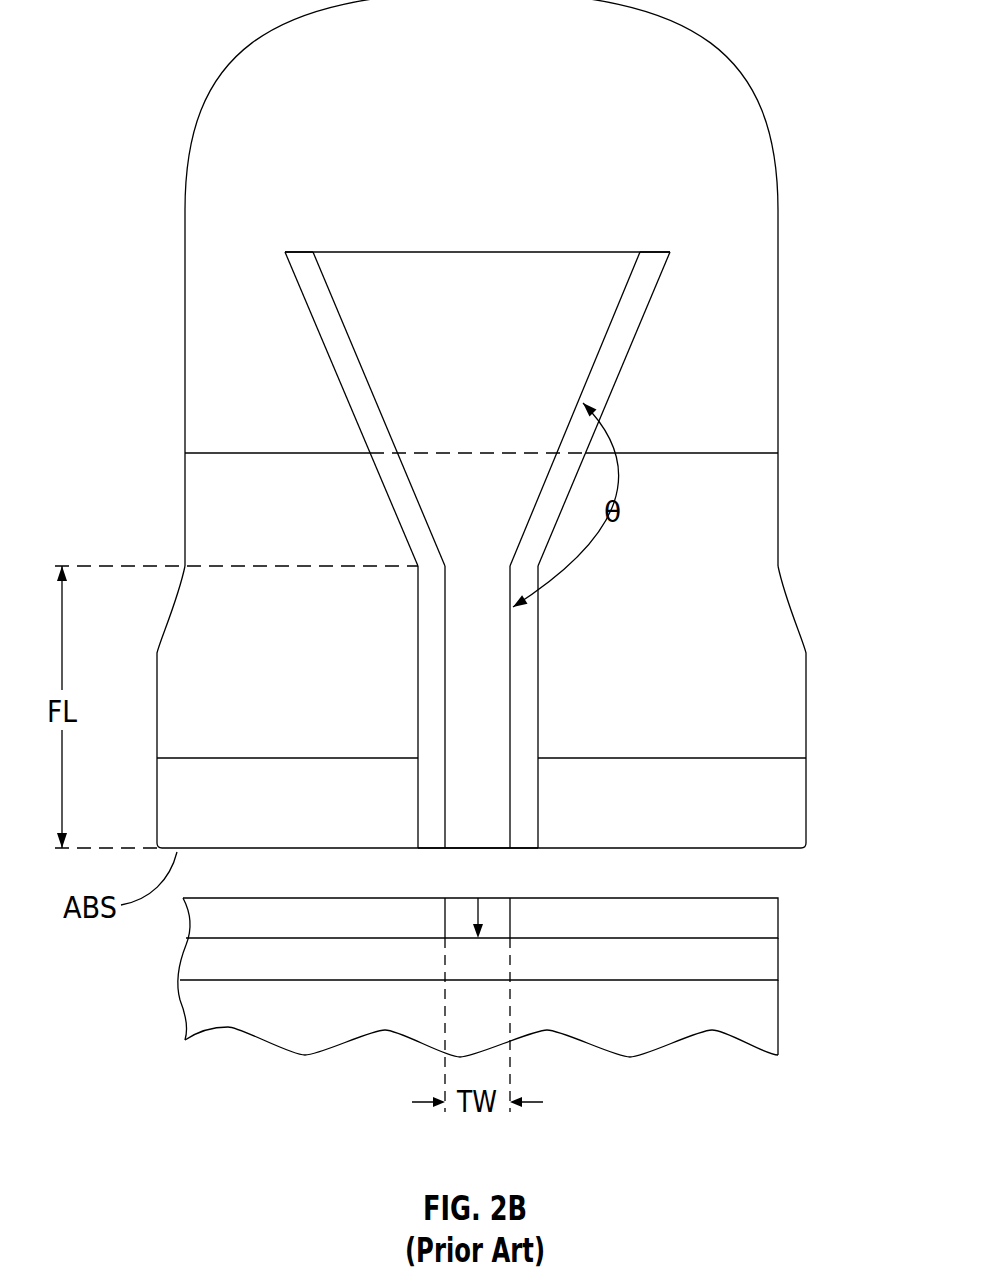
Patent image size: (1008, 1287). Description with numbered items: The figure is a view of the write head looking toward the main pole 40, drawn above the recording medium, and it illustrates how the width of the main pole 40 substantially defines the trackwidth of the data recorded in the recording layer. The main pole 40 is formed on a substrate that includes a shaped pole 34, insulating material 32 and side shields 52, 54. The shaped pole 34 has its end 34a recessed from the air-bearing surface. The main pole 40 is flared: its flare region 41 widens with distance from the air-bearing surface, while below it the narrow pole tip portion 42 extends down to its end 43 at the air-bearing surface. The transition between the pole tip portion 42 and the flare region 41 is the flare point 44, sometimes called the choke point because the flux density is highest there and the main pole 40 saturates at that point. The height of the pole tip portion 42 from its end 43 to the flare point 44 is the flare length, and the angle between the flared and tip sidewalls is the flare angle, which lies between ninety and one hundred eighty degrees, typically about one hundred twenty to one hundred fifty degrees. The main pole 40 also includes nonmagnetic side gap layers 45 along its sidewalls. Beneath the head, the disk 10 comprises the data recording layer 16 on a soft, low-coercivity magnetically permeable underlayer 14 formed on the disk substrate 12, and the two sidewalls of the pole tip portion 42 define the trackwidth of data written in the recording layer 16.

The perpendicular magnetic recording disk 10 is at (445, 1021).
The disk substrate 12 is at (200, 1010).
The soft underlayer 14 is at (200, 957).
The data recording layer 16 is at (200, 910).
The insulating material 32 is at (763, 545).
The shaped pole 34 is at (769, 268).
The end of shaped pole 34a is at (658, 453).
The main pole 40 is at (372, 251).
The flare region 41 is at (412, 465).
The pole tip portion 42 is at (467, 627).
The end of pole tip 43 is at (477, 852).
The flare point 44 is at (508, 566).
The nonmagnetic side gap layers 45 is at (318, 312).
The side shield 52 is at (787, 825).
The side shield 54 is at (175, 823).